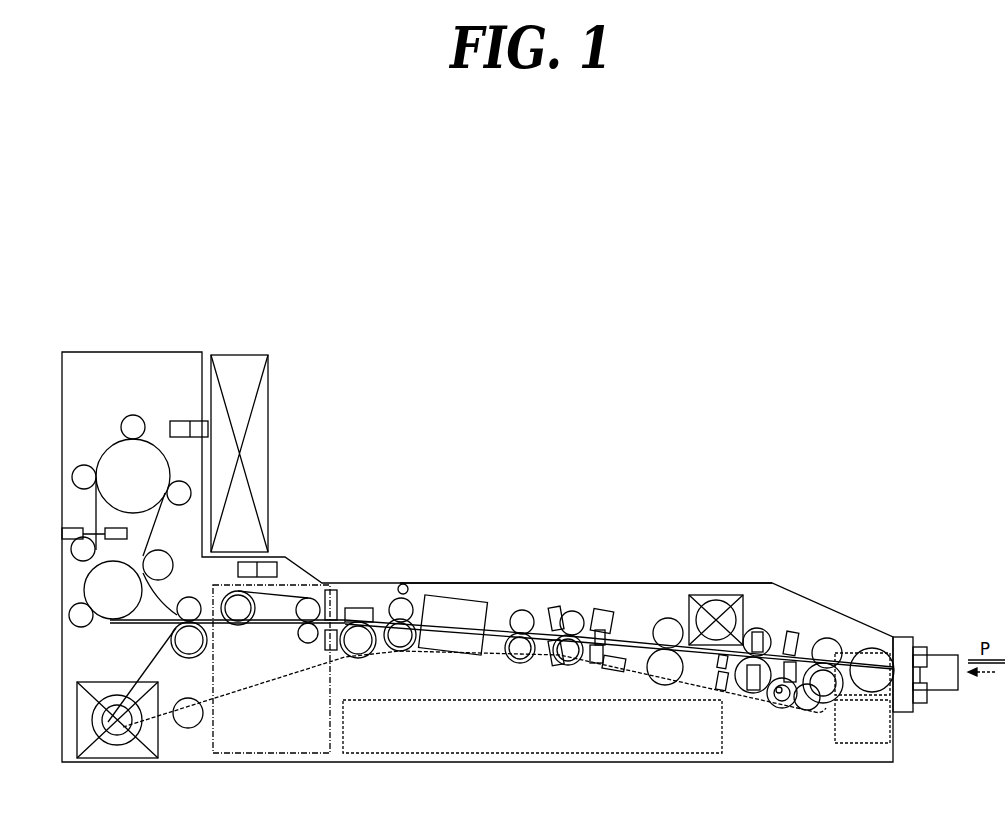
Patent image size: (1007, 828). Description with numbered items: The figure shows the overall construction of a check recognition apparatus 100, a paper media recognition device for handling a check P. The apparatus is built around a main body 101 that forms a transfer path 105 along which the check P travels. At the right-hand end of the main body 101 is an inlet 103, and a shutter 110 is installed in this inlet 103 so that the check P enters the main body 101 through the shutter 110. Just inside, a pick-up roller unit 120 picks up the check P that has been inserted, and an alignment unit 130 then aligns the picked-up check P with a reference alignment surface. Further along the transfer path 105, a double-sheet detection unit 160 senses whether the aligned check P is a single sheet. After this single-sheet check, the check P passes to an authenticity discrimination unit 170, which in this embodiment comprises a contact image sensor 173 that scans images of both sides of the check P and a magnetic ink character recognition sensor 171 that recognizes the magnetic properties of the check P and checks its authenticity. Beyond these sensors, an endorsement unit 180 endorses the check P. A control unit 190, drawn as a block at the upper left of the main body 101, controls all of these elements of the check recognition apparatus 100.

The check recognition apparatus 100 is at (562, 298).
The main body 101 is at (513, 763).
The inlet 103 is at (933, 649).
The transfer path 105 is at (648, 593).
The shutter 110 is at (872, 644).
The pick-up roller unit 120 is at (822, 634).
The alignment unit 130 is at (715, 594).
The double-sheet detection unit 160 is at (598, 604).
The authenticity discrimination unit 170 is at (484, 571).
The magnetic ink character recognition sensor 171 is at (527, 591).
The contact image sensor 173 is at (455, 594).
The endorsement unit 180 is at (287, 584).
The control unit 190 is at (278, 393).